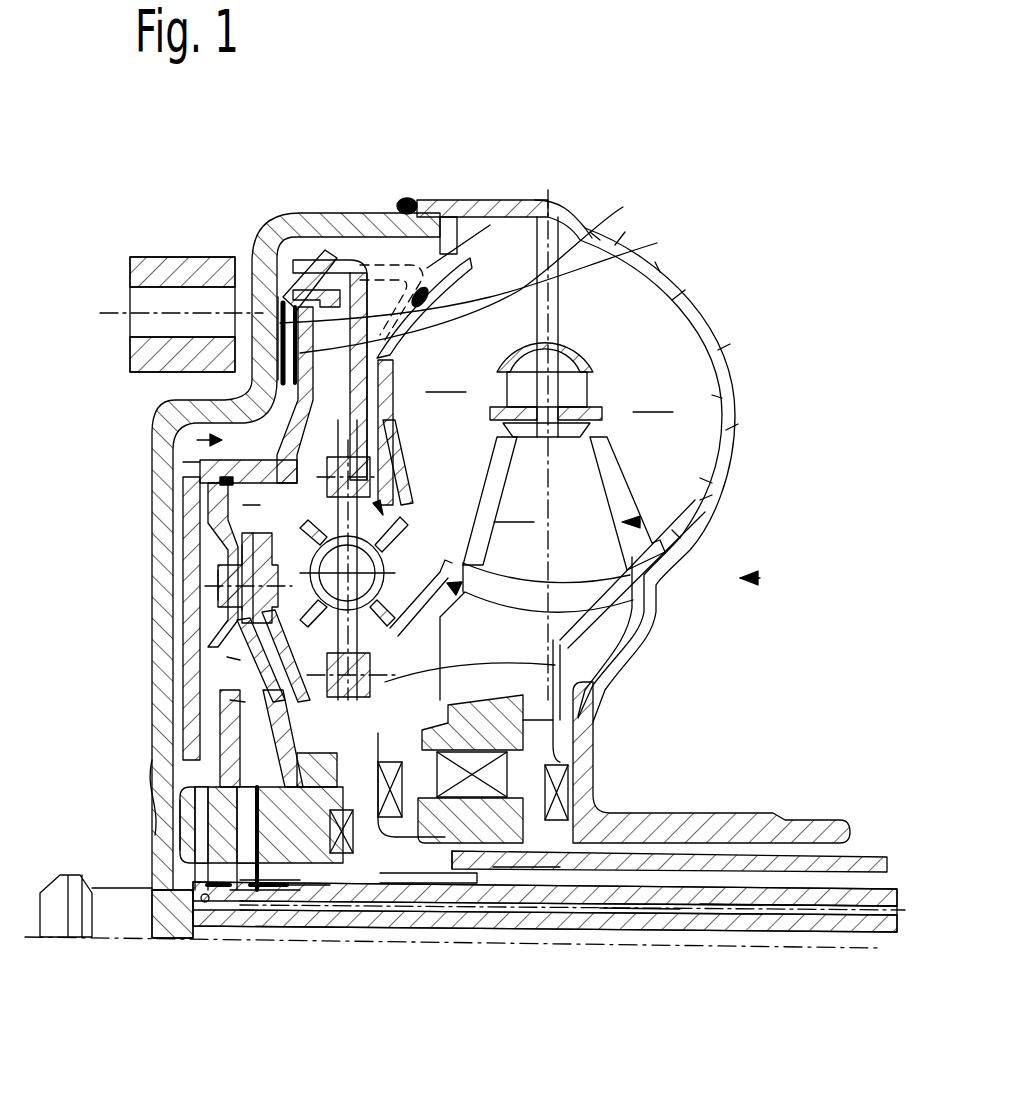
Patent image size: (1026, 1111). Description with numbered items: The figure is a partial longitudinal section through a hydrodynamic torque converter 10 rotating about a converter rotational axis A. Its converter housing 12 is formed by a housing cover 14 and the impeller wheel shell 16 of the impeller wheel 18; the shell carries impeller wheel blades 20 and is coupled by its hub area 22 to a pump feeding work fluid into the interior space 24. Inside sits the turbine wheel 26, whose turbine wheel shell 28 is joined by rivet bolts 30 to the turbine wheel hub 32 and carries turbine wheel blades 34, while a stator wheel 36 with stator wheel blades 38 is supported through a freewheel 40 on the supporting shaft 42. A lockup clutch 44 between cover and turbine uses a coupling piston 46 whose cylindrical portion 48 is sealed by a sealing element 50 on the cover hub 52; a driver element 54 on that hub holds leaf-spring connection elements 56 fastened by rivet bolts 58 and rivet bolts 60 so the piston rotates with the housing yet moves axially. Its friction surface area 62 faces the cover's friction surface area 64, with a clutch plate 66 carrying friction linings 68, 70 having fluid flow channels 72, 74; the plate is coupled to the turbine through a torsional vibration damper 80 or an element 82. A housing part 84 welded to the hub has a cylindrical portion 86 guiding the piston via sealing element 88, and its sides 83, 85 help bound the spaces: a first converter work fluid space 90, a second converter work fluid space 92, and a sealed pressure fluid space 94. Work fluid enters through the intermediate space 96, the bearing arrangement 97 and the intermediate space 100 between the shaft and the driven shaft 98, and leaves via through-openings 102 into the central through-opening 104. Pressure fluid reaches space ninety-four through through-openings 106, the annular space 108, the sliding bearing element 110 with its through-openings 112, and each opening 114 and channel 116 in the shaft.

The hydrodynamic torque converter 10 is at (585, 203).
The converter housing 12 is at (461, 205).
The housing cover 14 is at (300, 213).
The impeller wheel shell 16 is at (649, 461).
The impeller wheel 18 is at (758, 578).
The impeller wheel blades 20 is at (653, 393).
The hub area 22 is at (630, 822).
The interior space 24 is at (567, 373).
The turbine wheel 26 is at (640, 614).
The turbine wheel shell 28 is at (610, 573).
The rivet bolts 30 is at (583, 652).
The turbine wheel hub 32 is at (455, 880).
The turbine wheel blades 34 is at (382, 381).
The stator wheel 36 is at (577, 638).
The stator wheel blades 38 is at (514, 503).
The freewheel 40 is at (557, 740).
The supporting shaft 42 is at (705, 862).
The lockup clutch 44 is at (200, 445).
The coupling piston 46 is at (217, 497).
The cylindrical portion 48 is at (277, 783).
The sealing element 50 is at (230, 800).
The cover hub 52 is at (407, 867).
The driver element 54 is at (493, 867).
The connection elements 56 is at (243, 553).
The rivet bolts 58 is at (262, 600).
The rivet bolts 60 is at (217, 597).
The friction surface area 62 is at (478, 270).
The friction surface area 64 is at (283, 300).
The clutch plate 66 is at (287, 292).
The friction lining 68 is at (280, 378).
The friction lining 70 is at (485, 272).
The fluid flow channel 72 is at (282, 283).
The fluid flow channel 74 is at (305, 285).
The torsional vibration damper 80 is at (460, 503).
The element 82 is at (473, 250).
The side 83 is at (243, 510).
The housing part 84 is at (230, 700).
The side 85 is at (227, 657).
The cylindrical portion 86 is at (183, 462).
The sealing element 88 is at (222, 484).
The first converter work fluid space 90 is at (638, 522).
The second converter work fluid space 92 is at (197, 440).
The pressure fluid space 94 is at (255, 730).
The intermediate space 96 is at (742, 855).
The bearing arrangement 97 is at (567, 772).
The driven shaft 98 is at (840, 920).
The intermediate space 100 is at (748, 878).
The through-openings 102 is at (200, 823).
The central through-opening 104 is at (247, 930).
The through-openings 106 is at (212, 870).
The annular space 108 is at (265, 890).
The sliding bearing element 110 is at (220, 875).
The through-openings 112 is at (240, 877).
The opening 114 is at (250, 892).
The channel 116 is at (637, 907).
The converter rotational axis A is at (683, 950).